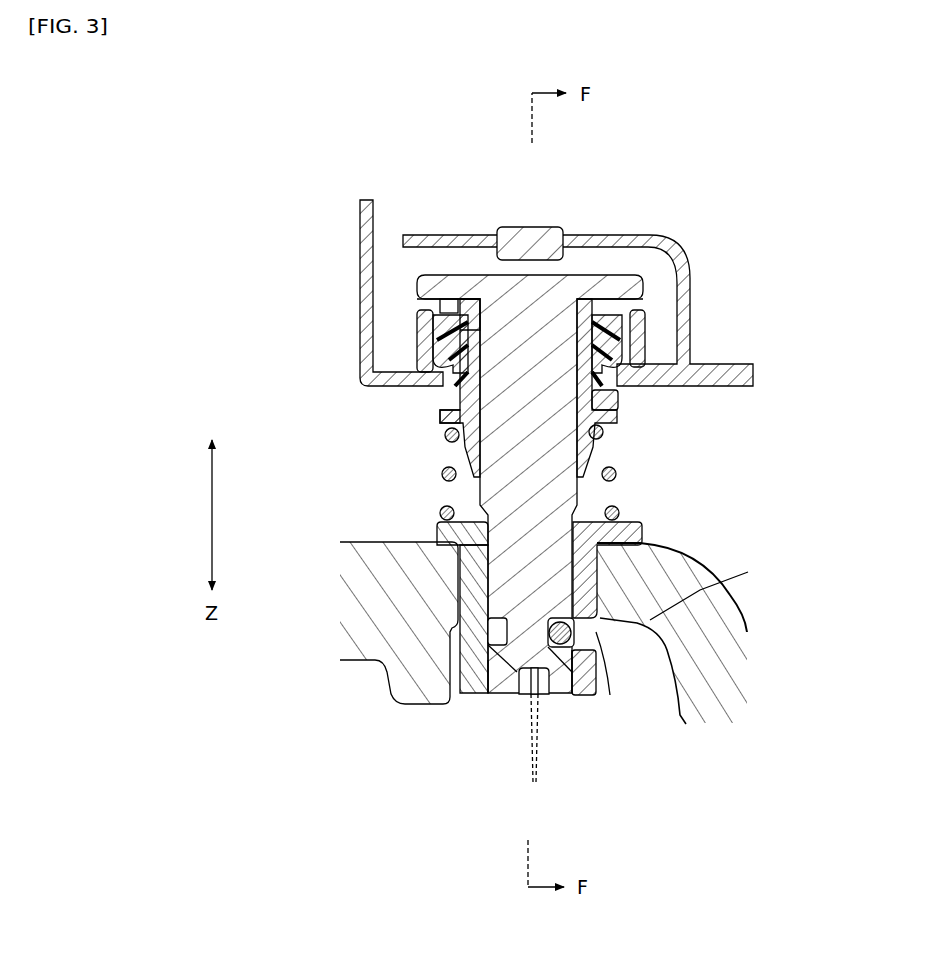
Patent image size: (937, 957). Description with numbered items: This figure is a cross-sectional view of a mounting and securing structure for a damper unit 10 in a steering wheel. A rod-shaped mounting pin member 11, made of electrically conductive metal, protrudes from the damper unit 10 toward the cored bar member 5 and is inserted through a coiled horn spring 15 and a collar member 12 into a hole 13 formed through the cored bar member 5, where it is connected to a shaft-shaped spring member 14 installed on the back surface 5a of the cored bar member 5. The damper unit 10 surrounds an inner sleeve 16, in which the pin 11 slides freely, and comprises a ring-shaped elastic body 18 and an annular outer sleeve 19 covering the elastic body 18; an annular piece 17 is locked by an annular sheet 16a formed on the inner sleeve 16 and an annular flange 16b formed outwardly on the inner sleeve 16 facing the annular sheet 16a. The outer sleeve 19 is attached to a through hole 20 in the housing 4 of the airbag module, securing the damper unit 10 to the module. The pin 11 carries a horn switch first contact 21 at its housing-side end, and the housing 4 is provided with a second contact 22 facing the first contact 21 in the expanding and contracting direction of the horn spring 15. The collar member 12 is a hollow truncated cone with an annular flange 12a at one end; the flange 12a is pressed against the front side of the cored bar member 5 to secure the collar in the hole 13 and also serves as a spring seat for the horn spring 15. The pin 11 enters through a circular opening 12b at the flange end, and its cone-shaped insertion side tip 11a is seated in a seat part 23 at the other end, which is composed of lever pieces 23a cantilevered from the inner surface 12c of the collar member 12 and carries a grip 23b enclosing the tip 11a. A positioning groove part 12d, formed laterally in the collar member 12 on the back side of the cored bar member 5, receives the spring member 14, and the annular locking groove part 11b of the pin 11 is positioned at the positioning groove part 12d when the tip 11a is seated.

The housing 4 is at (747, 387).
The cored bar member 5 is at (750, 600).
The back surface 5a is at (745, 573).
The damper unit 10 is at (360, 441).
The mounting pin member 11 is at (476, 490).
The insertion side tip 11a is at (495, 694).
The annular locking groove part 11b is at (473, 696).
The collar member 12 is at (445, 678).
The annular flange 12a is at (643, 532).
The circular opening 12b is at (614, 508).
The inner surface 12c is at (495, 598).
The positioning groove part 12d is at (615, 630).
The hole 13 is at (458, 567).
The spring member 14 is at (573, 600).
The horn spring 15 is at (441, 472).
The inner sleeve 16 is at (612, 443).
The annular sheet 16a is at (440, 421).
The annular flange 16b is at (466, 298).
The annular piece 17 is at (442, 298).
The elastic body 18 is at (433, 348).
The outer sleeve 19 is at (417, 318).
The through hole 20 is at (612, 402).
The horn switch first contact 21 is at (606, 290).
The second contact 22 is at (536, 231).
The seat part 23 is at (560, 708).
The lever pieces 23a is at (514, 692).
The grip 23b is at (533, 784).